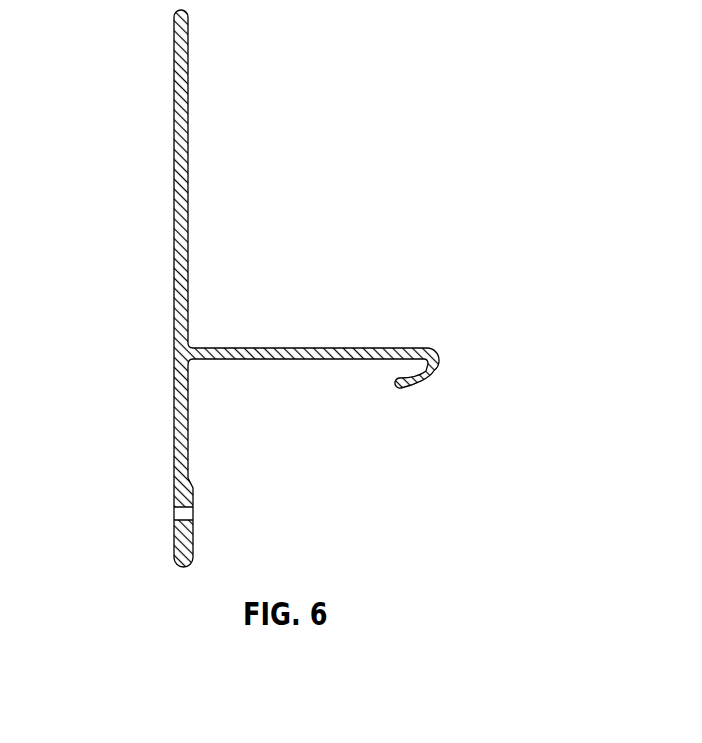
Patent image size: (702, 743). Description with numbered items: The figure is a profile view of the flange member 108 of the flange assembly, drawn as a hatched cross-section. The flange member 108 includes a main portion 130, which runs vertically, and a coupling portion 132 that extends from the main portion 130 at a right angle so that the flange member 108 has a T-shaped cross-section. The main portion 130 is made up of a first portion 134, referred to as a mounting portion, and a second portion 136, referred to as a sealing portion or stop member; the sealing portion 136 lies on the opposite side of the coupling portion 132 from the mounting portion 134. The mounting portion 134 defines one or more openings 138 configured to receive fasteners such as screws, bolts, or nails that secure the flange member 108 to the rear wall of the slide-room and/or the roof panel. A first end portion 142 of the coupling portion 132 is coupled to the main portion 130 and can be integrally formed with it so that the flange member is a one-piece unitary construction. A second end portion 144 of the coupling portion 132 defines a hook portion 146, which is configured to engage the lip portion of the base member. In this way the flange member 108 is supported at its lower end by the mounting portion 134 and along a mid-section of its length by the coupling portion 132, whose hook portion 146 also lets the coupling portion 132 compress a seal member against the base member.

The flange member 108 is at (173, 225).
The main portion 130 is at (173, 311).
The coupling portion 132 is at (302, 348).
The first portion 134 is at (173, 456).
The second portion 136 is at (173, 128).
The openings 138 is at (173, 514).
The first end portion 142 is at (211, 347).
The second end portion 144 is at (415, 347).
The hook portion 146 is at (436, 383).